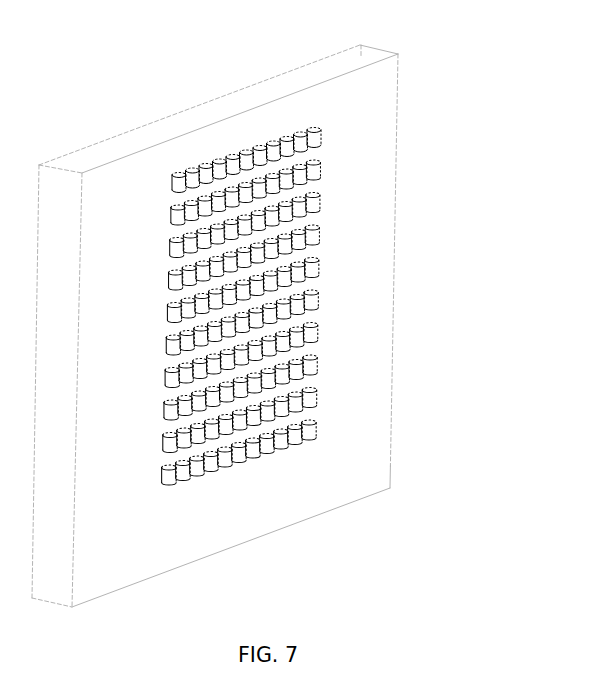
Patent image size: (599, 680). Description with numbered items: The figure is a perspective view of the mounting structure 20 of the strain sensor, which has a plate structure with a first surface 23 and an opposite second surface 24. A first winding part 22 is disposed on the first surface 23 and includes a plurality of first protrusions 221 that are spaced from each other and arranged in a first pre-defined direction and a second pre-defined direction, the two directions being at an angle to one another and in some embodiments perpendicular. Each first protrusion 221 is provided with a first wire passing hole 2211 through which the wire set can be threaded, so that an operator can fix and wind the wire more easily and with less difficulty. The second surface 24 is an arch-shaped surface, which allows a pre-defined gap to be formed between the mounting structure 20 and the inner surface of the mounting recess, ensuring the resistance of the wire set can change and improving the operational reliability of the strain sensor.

The mounting structure 20 is at (270, 310).
The first winding part 22 is at (458, 322).
The first protrusion 221 is at (314, 300).
The first wire passing hole 2211 is at (310, 126).
The first surface 23 is at (362, 205).
The second surface 24 is at (119, 142).